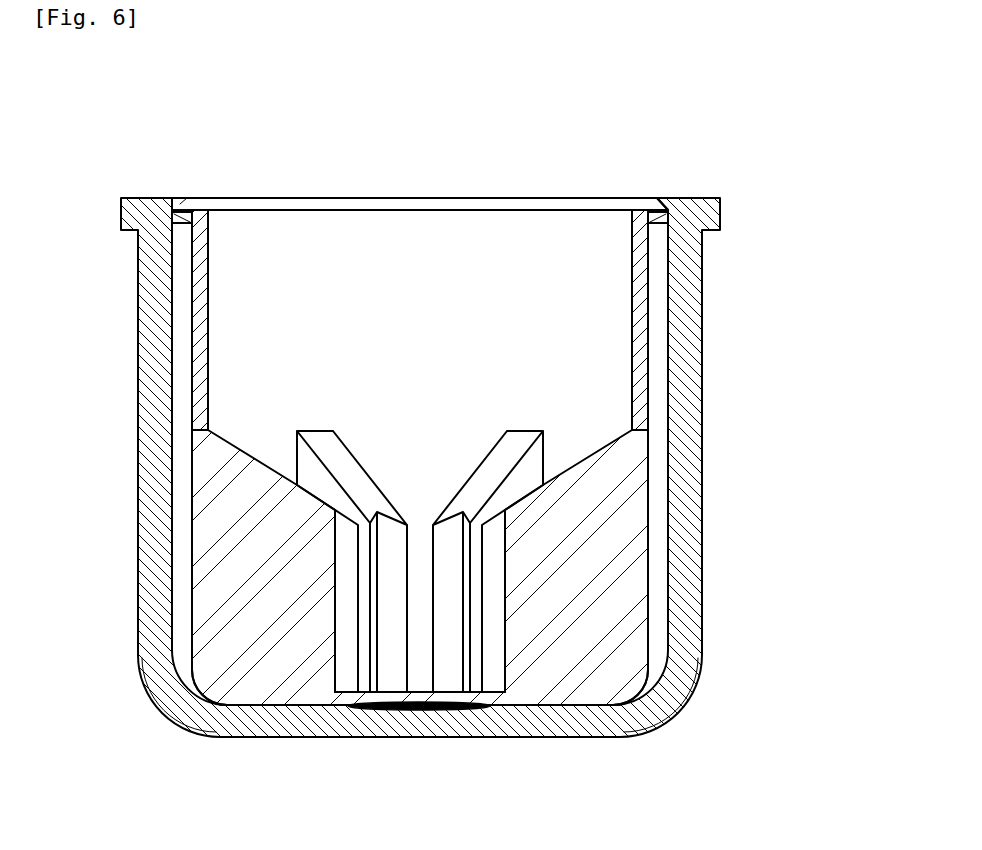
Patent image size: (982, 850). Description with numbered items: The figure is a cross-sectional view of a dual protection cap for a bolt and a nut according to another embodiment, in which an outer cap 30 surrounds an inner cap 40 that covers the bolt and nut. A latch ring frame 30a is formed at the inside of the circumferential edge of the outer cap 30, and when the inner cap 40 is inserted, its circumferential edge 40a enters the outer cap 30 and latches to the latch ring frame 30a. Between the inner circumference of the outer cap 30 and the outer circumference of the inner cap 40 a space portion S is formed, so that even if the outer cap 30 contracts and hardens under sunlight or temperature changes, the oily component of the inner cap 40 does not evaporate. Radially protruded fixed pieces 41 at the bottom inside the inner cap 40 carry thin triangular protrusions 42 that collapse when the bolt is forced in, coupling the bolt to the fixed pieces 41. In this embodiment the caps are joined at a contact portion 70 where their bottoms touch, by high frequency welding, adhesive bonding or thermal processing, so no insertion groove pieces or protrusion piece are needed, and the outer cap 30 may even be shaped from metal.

The outer cap 30 is at (460, 467).
The latch ring frame 30a is at (178, 213).
The circumferential edge of the inner cap 40a is at (671, 210).
The inner cap 40 is at (645, 352).
The space portion S is at (182, 293).
The fixed piece 41 is at (258, 648).
The triangular protrusion 42 is at (340, 640).
The contact portion 70 is at (424, 713).